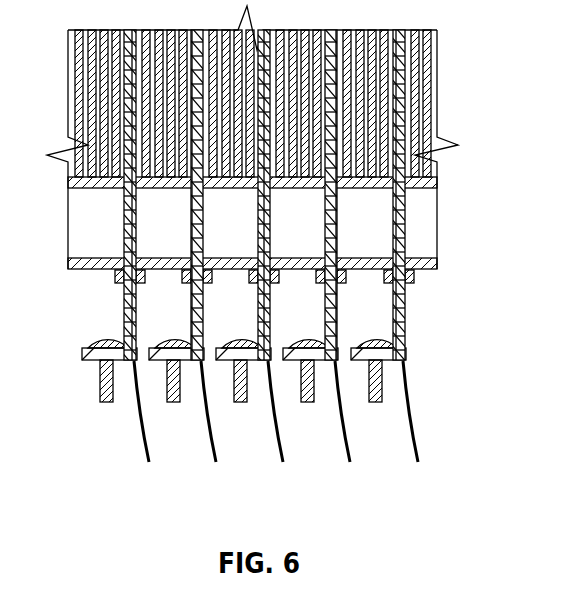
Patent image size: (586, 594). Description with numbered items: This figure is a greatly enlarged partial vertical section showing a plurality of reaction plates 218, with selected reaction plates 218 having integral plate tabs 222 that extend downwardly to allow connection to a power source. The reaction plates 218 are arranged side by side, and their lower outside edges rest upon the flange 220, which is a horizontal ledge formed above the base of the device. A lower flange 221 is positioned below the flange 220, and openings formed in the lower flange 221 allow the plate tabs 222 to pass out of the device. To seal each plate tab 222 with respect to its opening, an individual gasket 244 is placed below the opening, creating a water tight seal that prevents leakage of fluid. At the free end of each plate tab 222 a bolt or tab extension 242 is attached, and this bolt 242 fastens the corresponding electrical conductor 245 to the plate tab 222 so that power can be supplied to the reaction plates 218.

The reaction plates 218 is at (455, 90).
The flange 220 is at (113, 190).
The lower flange 221 is at (240, 269).
The plate tab 222 is at (122, 312).
The bolt or tab extension 242 is at (105, 403).
The gasket 244 is at (115, 278).
The electrical conductor 245 is at (148, 458).